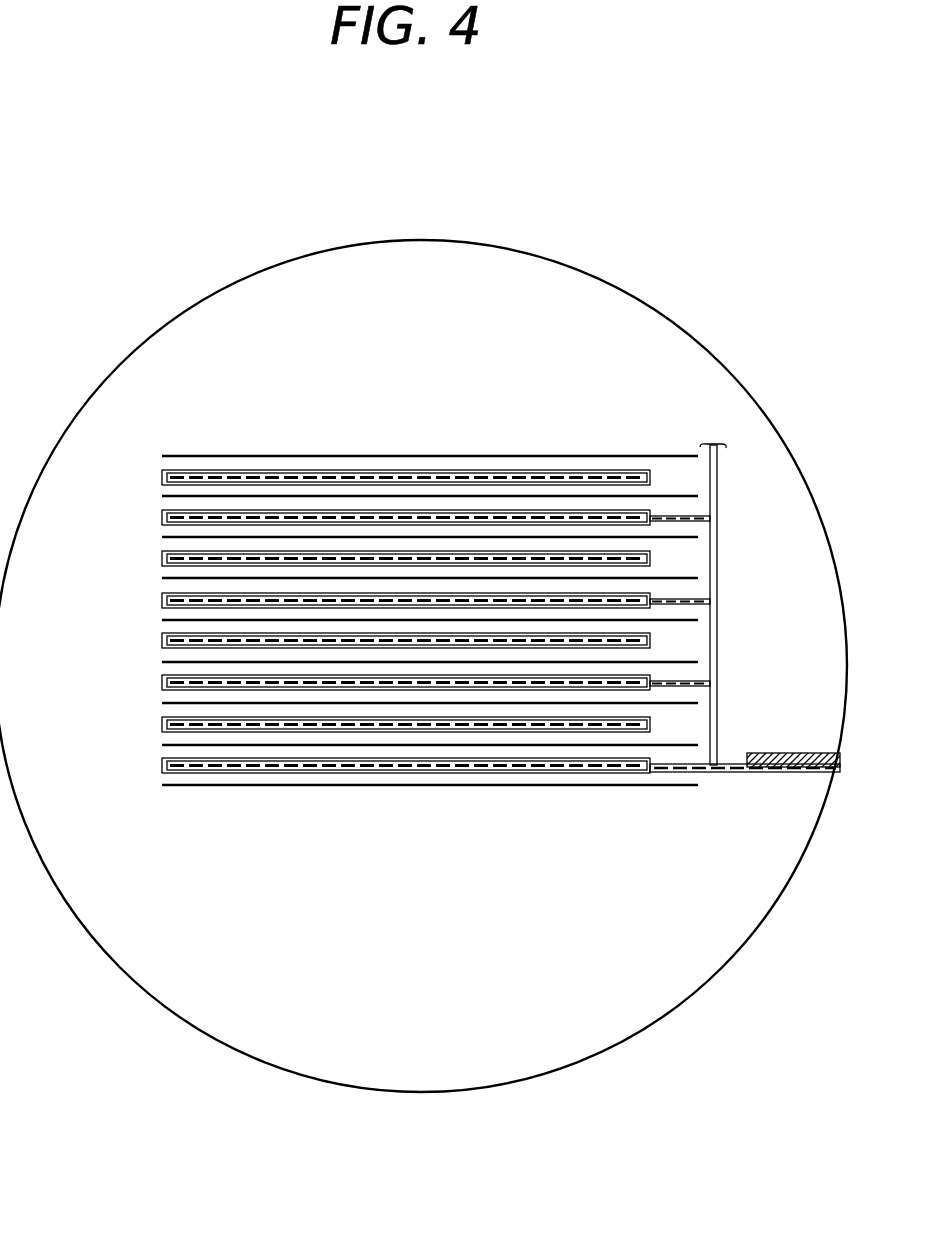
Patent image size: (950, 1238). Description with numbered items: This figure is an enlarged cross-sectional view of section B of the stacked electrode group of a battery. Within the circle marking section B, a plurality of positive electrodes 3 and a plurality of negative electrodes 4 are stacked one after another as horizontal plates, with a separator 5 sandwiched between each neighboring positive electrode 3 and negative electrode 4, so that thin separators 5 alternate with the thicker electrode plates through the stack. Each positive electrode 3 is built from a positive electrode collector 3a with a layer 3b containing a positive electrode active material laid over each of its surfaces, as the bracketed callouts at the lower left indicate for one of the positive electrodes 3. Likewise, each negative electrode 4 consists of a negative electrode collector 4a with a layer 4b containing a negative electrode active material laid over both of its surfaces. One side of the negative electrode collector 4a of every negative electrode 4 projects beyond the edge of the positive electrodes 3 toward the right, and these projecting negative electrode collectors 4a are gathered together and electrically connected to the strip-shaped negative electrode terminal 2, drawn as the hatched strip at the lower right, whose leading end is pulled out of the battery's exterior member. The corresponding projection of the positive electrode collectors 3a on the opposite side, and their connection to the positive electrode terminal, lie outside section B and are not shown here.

The negative electrode terminal 2 is at (768, 776).
The positive electrode 3 is at (331, 625).
The positive electrode collector 3a is at (164, 725).
The layer containing a positive electrode active material 3b is at (164, 719).
The negative electrode 4 is at (451, 671).
The negative electrode collector 4a is at (686, 520).
The layer containing a negative electrode active material 4b is at (162, 760).
The separator 5 is at (500, 456).
The section B is at (712, 976).